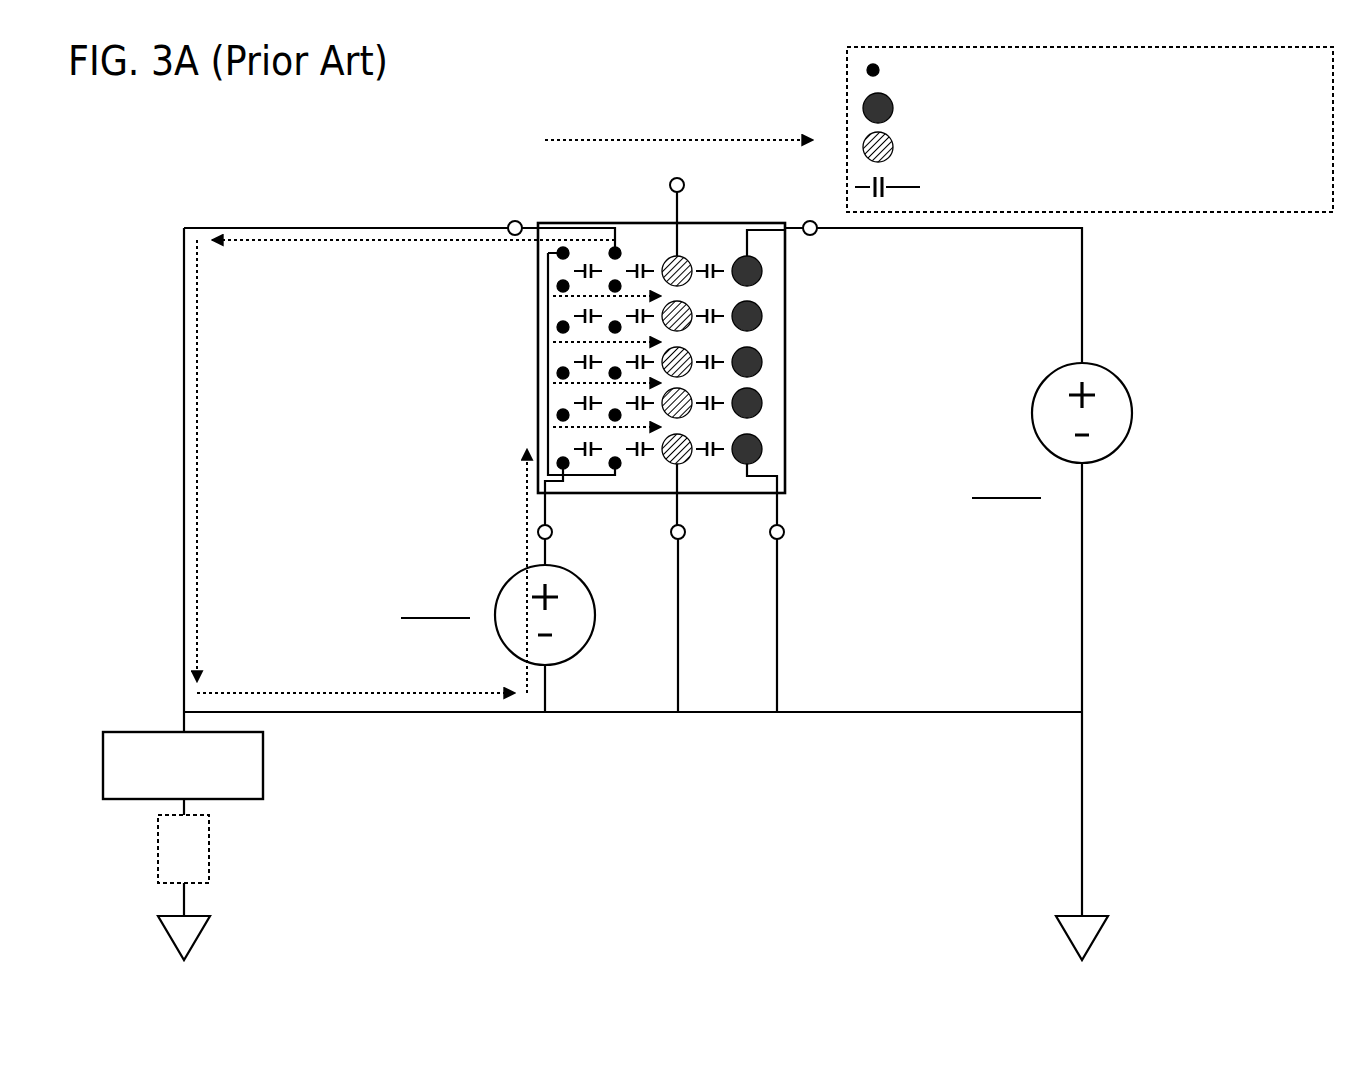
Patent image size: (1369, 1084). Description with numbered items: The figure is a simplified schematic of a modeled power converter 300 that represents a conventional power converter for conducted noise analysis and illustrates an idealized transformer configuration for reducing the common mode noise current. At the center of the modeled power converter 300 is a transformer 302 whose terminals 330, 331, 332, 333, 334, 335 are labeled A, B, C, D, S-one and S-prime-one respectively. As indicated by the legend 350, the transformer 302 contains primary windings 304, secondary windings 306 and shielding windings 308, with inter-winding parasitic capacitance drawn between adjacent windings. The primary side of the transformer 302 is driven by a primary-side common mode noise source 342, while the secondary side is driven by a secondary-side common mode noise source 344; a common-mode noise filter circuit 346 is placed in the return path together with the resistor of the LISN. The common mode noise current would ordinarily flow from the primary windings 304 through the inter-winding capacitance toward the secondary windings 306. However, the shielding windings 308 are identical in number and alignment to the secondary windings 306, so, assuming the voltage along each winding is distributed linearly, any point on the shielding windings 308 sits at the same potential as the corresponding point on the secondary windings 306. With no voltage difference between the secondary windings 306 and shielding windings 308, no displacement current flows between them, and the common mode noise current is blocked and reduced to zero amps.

The modeled power converter 300 is at (158, 203).
The transformer 302 is at (565, 190).
The primary windings 304 is at (885, 262).
The secondary windings 306 is at (988, 278).
The shielding windings 308 is at (946, 298).
The terminal A 330 is at (552, 538).
The terminal B 331 is at (510, 224).
The terminal C 332 is at (817, 235).
The terminal D 333 is at (783, 538).
The terminal S1 334 is at (684, 185).
The terminal S'1 335 is at (684, 538).
The primary-side common mode noise source 342 is at (589, 585).
The secondary-side common mode noise source 344 is at (1033, 412).
The common-mode noise filter circuit 346 is at (263, 782).
The legend 350 is at (1190, 213).